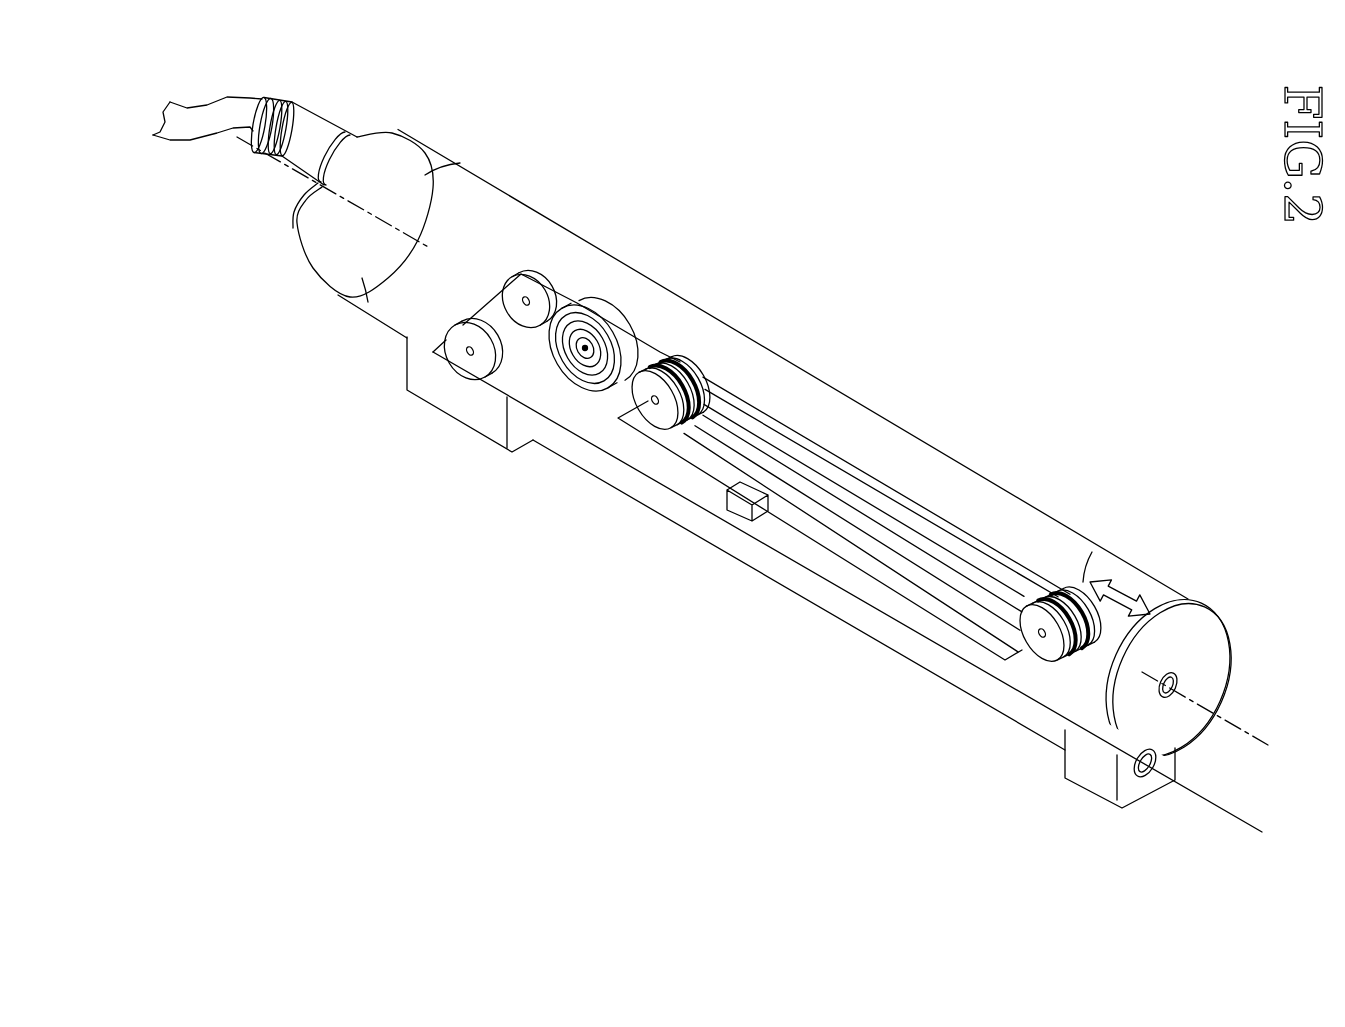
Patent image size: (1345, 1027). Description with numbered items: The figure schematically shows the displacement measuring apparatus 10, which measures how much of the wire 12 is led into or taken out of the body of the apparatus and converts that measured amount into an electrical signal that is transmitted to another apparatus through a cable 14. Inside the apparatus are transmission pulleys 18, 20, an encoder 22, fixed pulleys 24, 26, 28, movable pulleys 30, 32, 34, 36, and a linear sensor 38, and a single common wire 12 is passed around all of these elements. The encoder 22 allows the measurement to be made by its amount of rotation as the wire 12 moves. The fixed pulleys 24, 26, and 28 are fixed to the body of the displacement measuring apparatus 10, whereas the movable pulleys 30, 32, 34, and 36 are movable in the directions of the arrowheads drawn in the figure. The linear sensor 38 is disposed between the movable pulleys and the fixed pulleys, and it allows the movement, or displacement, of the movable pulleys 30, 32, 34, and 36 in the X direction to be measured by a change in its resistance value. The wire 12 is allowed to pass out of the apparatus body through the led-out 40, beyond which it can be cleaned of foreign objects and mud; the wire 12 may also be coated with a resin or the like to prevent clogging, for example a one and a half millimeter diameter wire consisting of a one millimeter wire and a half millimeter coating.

The displacement measuring apparatus 10 is at (830, 508).
The wire 12 is at (1197, 796).
The cable 14 is at (259, 97).
The transmission pulley 18 is at (448, 358).
The transmission pulley 20 is at (516, 278).
The encoder 22 is at (582, 354).
The fixed pulley 24 is at (686, 357).
The fixed pulley 26 is at (666, 358).
The fixed pulley 28 is at (652, 400).
The movable pulley 30 is at (1090, 556).
The movable pulley 32 is at (1075, 660).
The movable pulley 34 is at (1069, 657).
The movable pulley 36 is at (1042, 655).
The linear sensor 38 is at (737, 505).
The led-out 40 is at (1135, 787).